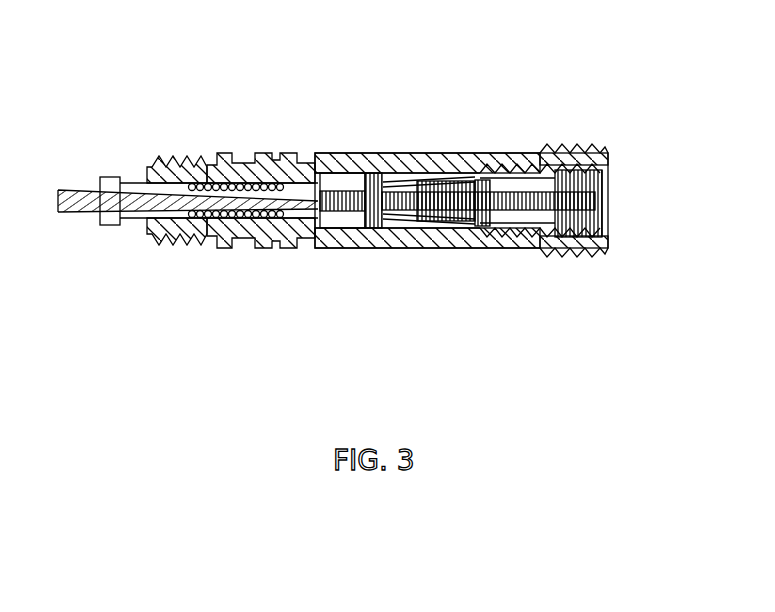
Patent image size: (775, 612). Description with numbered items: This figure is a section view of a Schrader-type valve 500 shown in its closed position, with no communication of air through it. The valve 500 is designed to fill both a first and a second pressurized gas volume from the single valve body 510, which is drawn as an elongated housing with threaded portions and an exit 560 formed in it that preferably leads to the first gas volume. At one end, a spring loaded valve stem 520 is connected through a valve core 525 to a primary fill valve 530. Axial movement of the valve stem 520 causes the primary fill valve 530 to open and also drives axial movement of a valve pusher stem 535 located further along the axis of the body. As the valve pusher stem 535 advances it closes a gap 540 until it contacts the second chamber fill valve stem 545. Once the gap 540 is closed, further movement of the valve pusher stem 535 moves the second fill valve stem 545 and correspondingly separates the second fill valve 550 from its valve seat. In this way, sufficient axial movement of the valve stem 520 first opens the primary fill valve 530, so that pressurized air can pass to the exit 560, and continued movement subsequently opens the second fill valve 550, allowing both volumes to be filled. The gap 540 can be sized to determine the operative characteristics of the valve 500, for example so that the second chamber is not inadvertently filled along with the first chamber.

The Schrader-type valve 500 is at (631, 78).
The valve body 510 is at (422, 153).
The valve stem 520 is at (586, 200).
The valve core 525 is at (526, 172).
The primary fill valve 530 is at (393, 228).
The valve pusher stem 535 is at (336, 248).
The gap 540 is at (314, 172).
The second chamber fill valve stem 545 is at (243, 203).
The second fill valve 550 is at (128, 176).
The exit 560 is at (276, 168).